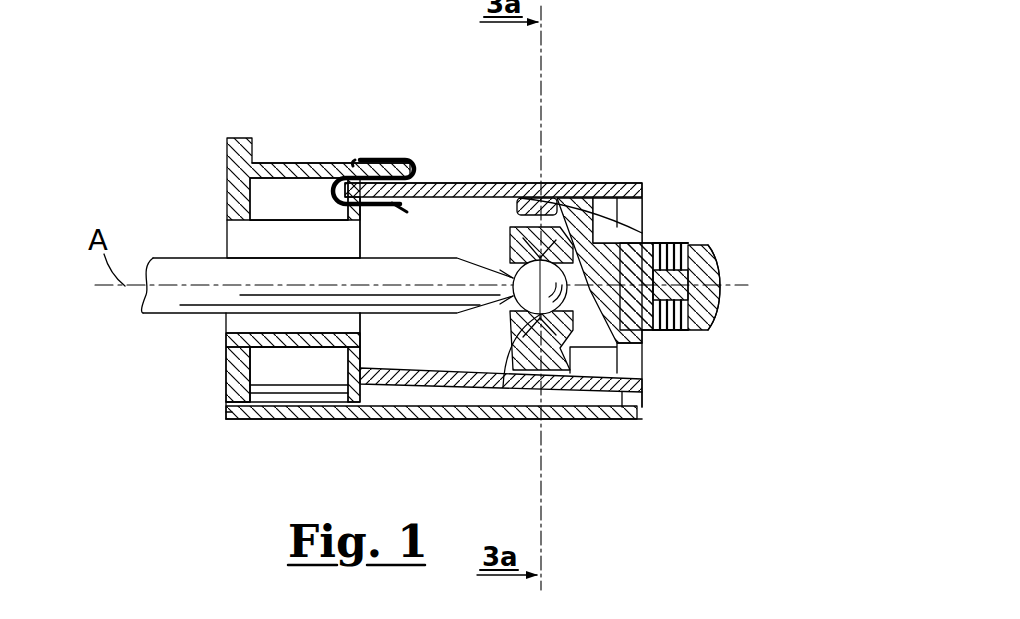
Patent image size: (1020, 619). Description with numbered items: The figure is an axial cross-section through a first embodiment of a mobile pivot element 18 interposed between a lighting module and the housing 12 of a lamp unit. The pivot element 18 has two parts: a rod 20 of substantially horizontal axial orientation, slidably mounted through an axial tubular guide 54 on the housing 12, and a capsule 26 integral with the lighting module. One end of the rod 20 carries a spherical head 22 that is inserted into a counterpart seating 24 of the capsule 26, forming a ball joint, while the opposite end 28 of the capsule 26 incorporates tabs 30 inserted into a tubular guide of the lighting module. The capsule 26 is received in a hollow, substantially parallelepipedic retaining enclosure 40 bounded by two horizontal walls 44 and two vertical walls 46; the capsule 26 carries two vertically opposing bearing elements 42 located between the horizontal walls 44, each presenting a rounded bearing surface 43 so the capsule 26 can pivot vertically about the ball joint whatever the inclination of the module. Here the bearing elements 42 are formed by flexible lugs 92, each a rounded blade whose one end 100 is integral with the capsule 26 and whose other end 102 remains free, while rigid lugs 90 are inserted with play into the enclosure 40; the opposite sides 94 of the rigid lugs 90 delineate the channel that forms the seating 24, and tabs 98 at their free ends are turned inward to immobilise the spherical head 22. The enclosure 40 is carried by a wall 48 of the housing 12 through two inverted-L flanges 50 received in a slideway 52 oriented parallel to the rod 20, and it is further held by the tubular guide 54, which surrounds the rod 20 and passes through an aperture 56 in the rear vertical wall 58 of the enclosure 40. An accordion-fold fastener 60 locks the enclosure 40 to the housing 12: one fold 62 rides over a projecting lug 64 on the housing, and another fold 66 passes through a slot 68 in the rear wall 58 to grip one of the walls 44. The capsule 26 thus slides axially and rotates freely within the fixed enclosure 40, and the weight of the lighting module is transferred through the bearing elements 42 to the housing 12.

The housing 12 is at (505, 428).
The pivot element 18 is at (485, 318).
The rod 20 is at (250, 273).
The spherical head 22 is at (602, 182).
The seating 24 is at (643, 357).
The capsule 26 is at (727, 272).
The opposite end 28 is at (720, 293).
The tabs 30 is at (677, 243).
The retaining enclosure 40 is at (438, 180).
The bearing elements 42 is at (563, 182).
The bearing surface 43 is at (547, 182).
The horizontal walls 44 is at (460, 182).
The vertical walls 46 is at (645, 195).
The wall of the housing 48 is at (305, 372).
The flanges 50 is at (398, 418).
The slideway 52 is at (263, 418).
The axial tubular guide 54 is at (245, 362).
The aperture 56 is at (367, 398).
The rear vertical wall 58 is at (330, 216).
The accordion-fold fastener 60 is at (388, 155).
The fold 62 is at (358, 148).
The projecting lug 64 is at (272, 163).
The fold 66 is at (400, 207).
The slot 68 is at (350, 210).
The rigid lugs 90 is at (540, 460).
The flexible lugs 92 is at (520, 182).
The opposite sides 94 is at (640, 387).
The tabs 98 is at (500, 337).
The end 100 is at (625, 213).
The end 102 is at (492, 182).